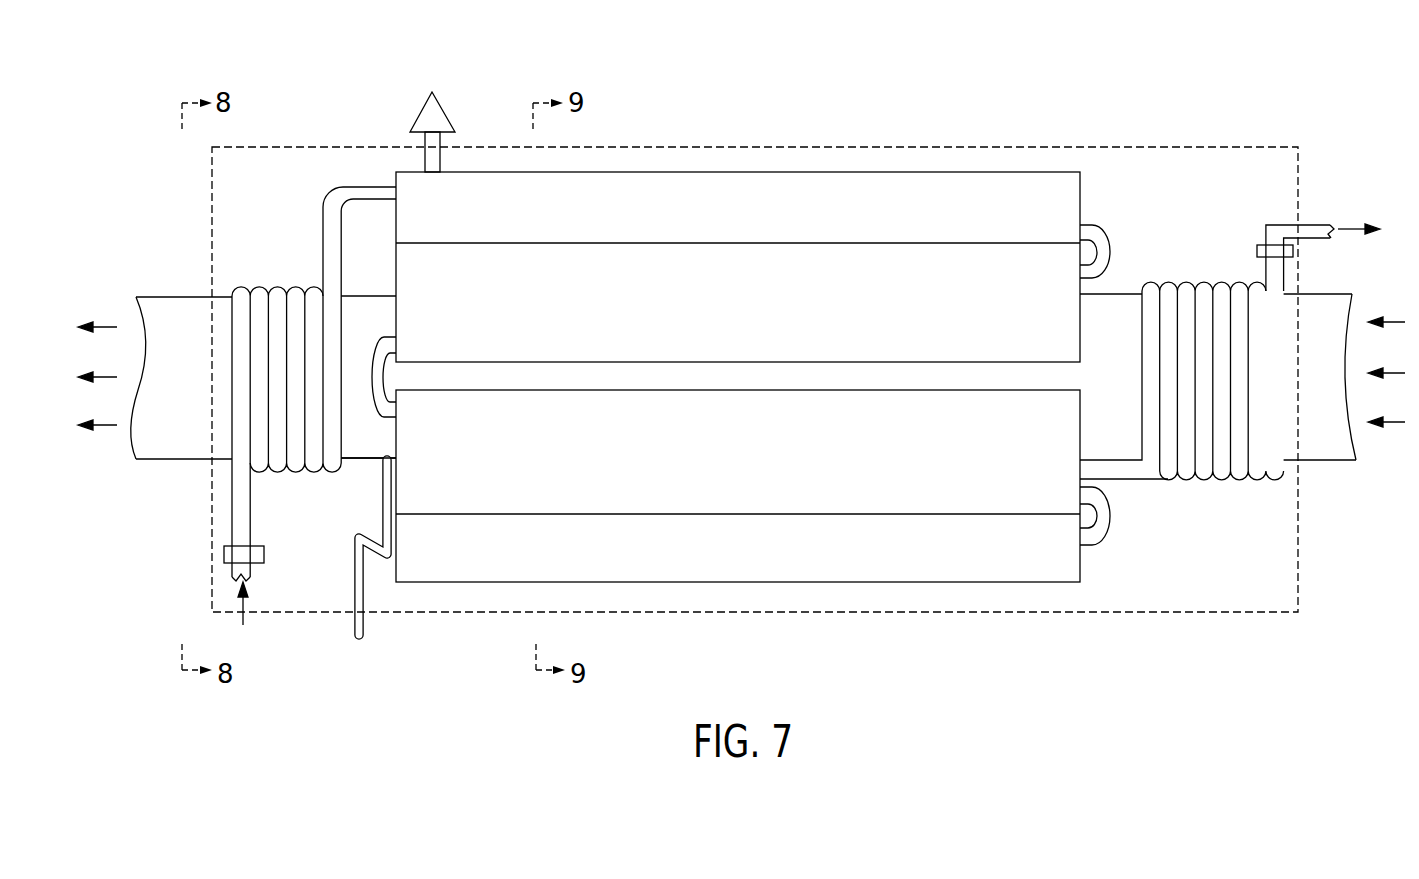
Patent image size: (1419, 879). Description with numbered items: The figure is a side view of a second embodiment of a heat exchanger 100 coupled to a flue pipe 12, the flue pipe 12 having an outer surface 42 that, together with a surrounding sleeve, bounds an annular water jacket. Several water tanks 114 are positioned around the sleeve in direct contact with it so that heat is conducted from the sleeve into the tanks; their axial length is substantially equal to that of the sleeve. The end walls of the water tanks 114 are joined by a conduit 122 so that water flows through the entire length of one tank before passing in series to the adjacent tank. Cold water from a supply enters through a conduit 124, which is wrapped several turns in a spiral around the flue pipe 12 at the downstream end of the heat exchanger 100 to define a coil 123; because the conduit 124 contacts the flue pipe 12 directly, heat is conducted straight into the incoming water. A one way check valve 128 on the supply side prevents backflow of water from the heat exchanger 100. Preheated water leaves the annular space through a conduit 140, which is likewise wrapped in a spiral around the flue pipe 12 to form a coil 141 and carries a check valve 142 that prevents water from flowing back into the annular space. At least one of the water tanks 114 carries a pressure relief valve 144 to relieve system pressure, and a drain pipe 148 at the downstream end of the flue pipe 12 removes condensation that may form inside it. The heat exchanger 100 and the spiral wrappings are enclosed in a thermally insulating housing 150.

The flue pipe 12 is at (1327, 452).
The outer surface 42 is at (1340, 297).
The heat exchanger 100 is at (766, 92).
The water tanks 114 is at (918, 192).
The conduit 122 is at (1110, 235).
The coil 123 is at (275, 275).
The conduit 124 is at (232, 482).
The one way check valve 128 is at (225, 550).
The conduit 140 is at (1280, 223).
The coil 141 is at (1185, 282).
The check valve 142 is at (1297, 250).
The pressure relief valve 144 is at (445, 112).
The drain pipe 148 is at (355, 563).
The thermally insulating housing 150 is at (931, 622).